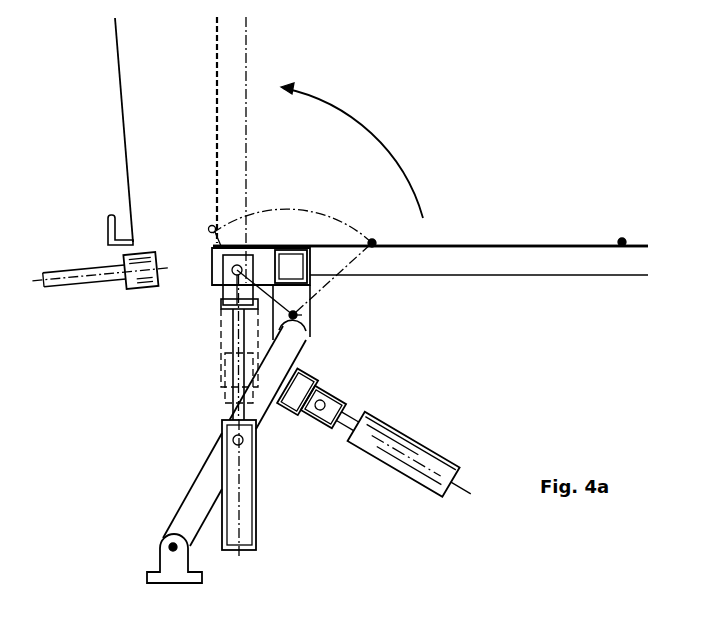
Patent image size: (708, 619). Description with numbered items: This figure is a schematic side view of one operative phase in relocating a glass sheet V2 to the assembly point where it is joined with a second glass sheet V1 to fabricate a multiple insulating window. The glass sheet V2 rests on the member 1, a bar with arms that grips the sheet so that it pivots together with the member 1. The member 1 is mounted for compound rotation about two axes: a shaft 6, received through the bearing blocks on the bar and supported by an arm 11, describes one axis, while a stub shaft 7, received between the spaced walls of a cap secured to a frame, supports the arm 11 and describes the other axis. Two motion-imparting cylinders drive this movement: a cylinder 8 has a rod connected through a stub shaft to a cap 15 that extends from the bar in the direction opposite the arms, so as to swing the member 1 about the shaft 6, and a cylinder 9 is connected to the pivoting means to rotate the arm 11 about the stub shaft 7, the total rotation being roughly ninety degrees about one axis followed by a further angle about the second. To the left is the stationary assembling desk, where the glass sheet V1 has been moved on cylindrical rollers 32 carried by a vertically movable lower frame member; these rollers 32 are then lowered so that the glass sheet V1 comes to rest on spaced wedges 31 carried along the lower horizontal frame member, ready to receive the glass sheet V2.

The member 1 is at (530, 268).
The shaft 6 is at (296, 315).
The stub shaft 7 is at (170, 547).
The cylinder 8 is at (243, 510).
The cylinder 9 is at (432, 468).
The arm 11 is at (188, 507).
The cap 15 is at (213, 276).
The wedges 31 is at (100, 237).
The rollers 32 is at (138, 282).
The glass sheet V1 is at (124, 120).
The glass sheet V2 is at (593, 247).